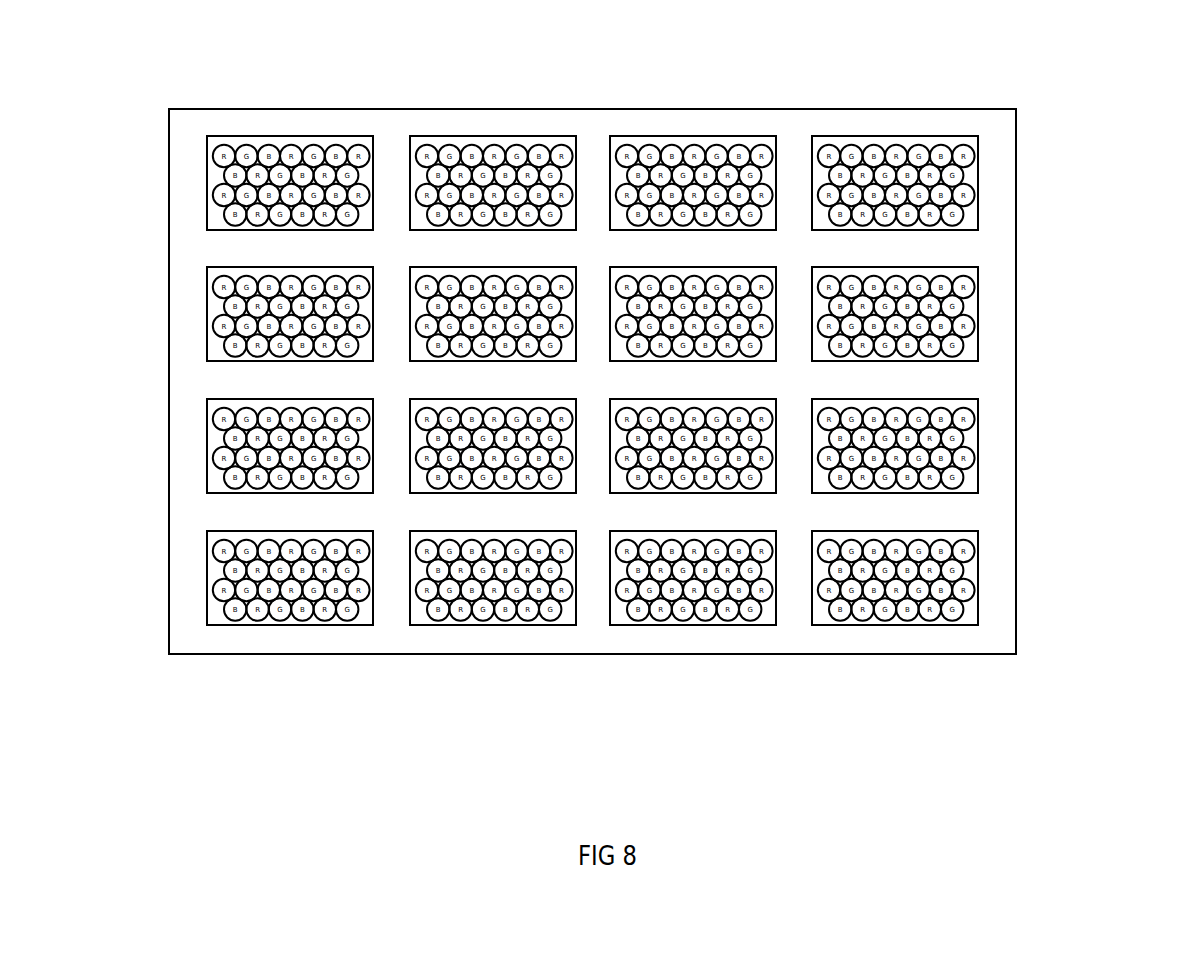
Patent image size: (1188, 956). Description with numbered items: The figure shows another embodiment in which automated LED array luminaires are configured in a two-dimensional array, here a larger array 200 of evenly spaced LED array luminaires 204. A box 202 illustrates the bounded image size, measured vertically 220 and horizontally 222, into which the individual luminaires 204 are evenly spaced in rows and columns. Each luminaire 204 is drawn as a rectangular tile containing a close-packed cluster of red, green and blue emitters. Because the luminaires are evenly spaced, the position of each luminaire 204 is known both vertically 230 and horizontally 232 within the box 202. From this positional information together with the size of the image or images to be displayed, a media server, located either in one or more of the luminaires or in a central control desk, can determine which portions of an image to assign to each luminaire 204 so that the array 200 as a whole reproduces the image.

The larger array 200 is at (540, 430).
The box 202 is at (169, 317).
The LED array luminaire 204 is at (766, 485).
The image size vertically 220 is at (1057, 106).
The image size horizontally 222 is at (1019, 63).
The position of each luminaire vertically 230 is at (601, 110).
The position of each luminaire horizontally 232 is at (168, 496).